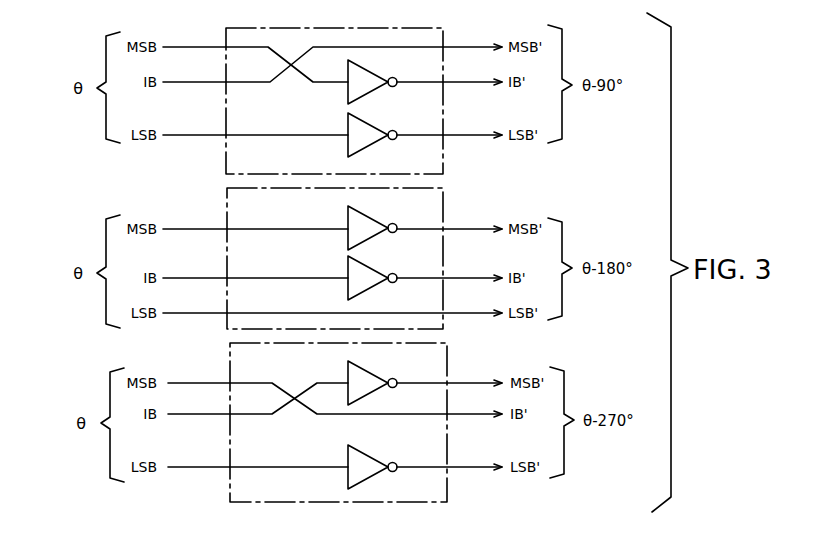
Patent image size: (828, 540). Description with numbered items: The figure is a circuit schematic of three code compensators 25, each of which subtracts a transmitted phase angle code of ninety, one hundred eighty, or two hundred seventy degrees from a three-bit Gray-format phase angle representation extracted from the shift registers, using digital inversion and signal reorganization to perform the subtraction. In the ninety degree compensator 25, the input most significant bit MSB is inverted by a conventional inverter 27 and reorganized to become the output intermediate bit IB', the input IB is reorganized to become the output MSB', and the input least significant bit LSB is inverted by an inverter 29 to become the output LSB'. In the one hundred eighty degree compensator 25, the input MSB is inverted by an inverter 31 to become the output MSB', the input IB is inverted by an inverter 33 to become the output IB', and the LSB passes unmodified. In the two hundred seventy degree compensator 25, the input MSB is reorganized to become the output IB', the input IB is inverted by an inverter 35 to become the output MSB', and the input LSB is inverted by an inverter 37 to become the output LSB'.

The code compensator 25 is at (226, 32).
The inverter 27 is at (365, 68).
The inverter 29 is at (365, 146).
The inverter 31 is at (365, 215).
The inverter 33 is at (365, 265).
The inverter 35 is at (365, 370).
The inverter 37 is at (362, 453).